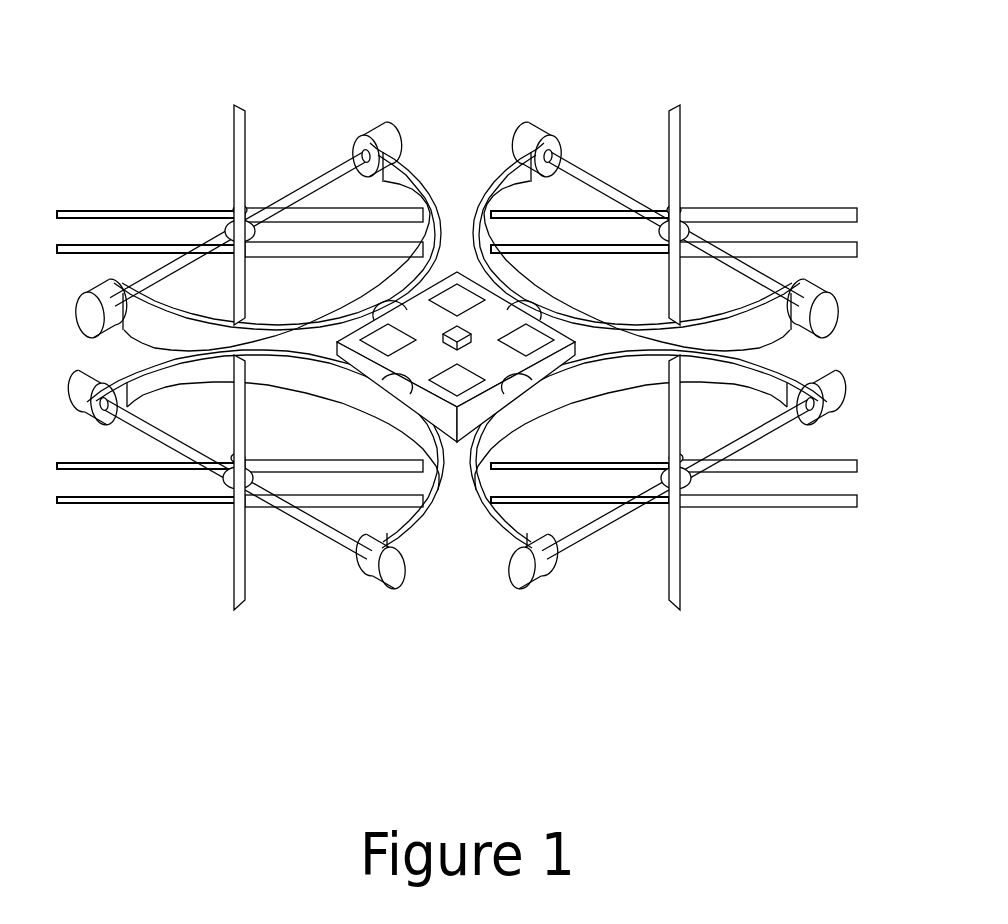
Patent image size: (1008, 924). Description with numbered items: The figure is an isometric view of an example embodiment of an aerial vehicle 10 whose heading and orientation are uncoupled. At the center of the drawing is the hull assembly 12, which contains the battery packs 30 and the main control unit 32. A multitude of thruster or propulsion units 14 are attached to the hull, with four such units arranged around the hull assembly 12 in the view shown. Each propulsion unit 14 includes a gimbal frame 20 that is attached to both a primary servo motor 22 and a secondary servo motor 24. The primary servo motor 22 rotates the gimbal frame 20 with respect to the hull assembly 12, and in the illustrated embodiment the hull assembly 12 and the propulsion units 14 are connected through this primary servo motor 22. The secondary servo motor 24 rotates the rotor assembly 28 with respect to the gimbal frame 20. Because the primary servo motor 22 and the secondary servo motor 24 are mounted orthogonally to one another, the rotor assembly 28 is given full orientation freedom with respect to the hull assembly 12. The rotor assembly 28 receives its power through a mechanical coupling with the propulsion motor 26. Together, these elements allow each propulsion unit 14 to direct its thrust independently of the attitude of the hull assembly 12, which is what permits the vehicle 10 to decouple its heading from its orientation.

The aerial vehicle 10 is at (160, 130).
The hull assembly 12 is at (457, 270).
The propulsion unit 14 is at (183, 553).
The gimbal frame 20 is at (490, 543).
The primary servo motor 22 is at (548, 326).
The secondary servo motor 24 is at (840, 407).
The propulsion motor 26 is at (530, 587).
The rotor assembly 28 is at (790, 512).
The battery pack 30 is at (447, 339).
The main control unit 32 is at (110, 382).